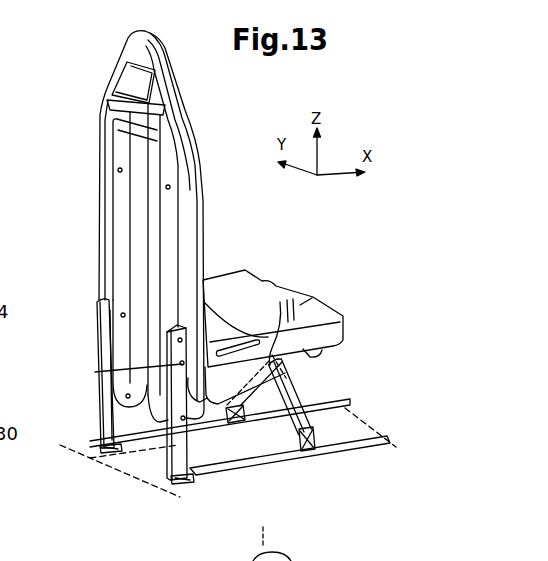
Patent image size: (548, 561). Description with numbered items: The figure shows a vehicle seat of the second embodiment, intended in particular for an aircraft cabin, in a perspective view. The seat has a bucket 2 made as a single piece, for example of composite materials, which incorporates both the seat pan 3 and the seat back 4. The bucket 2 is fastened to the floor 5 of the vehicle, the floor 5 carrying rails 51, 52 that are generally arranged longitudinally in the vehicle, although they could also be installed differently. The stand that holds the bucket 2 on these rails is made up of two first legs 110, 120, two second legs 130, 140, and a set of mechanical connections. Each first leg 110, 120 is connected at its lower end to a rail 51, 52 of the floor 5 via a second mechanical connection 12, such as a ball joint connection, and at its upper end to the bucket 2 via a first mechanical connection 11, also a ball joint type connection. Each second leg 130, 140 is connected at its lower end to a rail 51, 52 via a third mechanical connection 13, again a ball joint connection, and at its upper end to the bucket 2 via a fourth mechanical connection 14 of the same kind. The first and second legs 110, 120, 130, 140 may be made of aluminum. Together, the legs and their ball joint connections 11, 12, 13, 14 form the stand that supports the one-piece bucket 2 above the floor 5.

The bucket 2 is at (100, 250).
The seat pan 3 is at (246, 277).
The seat back 4 is at (190, 173).
The floor 5 is at (387, 452).
The first mechanical connection 11 is at (270, 357).
The second mechanical connection 12 is at (308, 448).
The third mechanical connection 13 is at (118, 452).
The fourth mechanical connection 14 is at (95, 372).
The rail 51 is at (302, 395).
The rail 52 is at (345, 452).
The first leg 110 is at (252, 364).
The first leg 120 is at (330, 413).
The second leg 130 is at (100, 418).
The second leg 140 is at (188, 450).